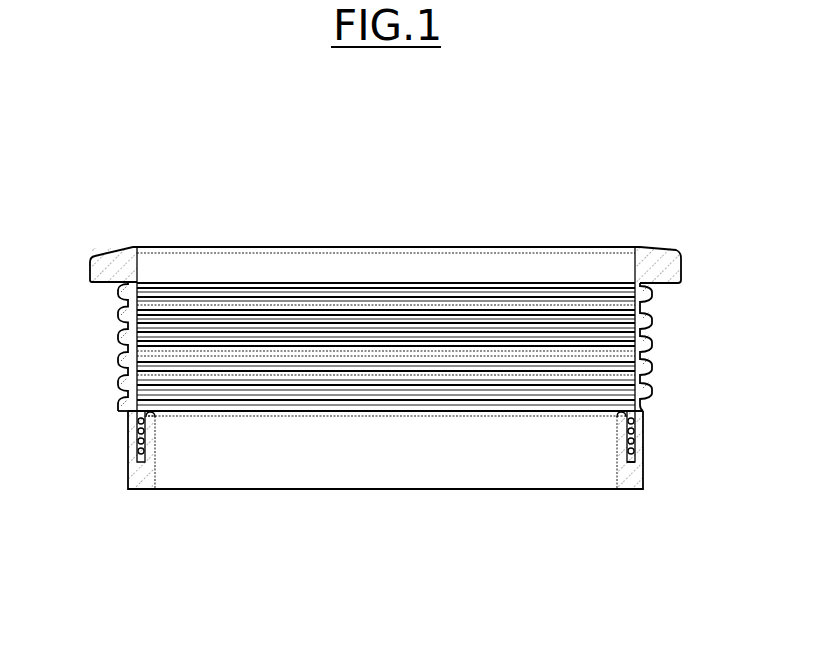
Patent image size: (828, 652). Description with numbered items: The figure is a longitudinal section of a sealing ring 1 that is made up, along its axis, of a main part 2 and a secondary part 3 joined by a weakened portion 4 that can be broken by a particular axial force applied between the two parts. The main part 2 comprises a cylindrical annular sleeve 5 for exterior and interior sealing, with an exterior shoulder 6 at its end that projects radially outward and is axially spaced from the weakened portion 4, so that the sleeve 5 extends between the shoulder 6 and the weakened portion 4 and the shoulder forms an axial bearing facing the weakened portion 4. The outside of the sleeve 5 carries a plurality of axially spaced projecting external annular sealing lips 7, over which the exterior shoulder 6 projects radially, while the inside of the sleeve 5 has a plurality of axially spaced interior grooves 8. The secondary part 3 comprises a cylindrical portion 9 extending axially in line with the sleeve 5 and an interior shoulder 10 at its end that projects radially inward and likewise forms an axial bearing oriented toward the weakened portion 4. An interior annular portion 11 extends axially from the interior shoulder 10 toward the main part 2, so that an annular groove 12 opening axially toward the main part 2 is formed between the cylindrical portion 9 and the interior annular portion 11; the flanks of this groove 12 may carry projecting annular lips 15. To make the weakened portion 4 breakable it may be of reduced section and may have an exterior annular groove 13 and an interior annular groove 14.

The sealing ring 1 is at (82, 247).
The main part 2 is at (118, 337).
The secondary part 3 is at (120, 455).
The weakened portion 4 is at (127, 411).
The cylindrical annular sleeve 5 is at (650, 353).
The exterior shoulder 6 is at (676, 268).
The external annular sealing lips 7 is at (654, 320).
The interior grooves 8 is at (222, 384).
The cylindrical portion 9 is at (638, 425).
The interior shoulder 10 is at (631, 484).
The interior annular portion 11 is at (620, 440).
The annular groove 12 is at (637, 438).
The exterior annular groove 13 is at (642, 411).
The interior annular groove 14 is at (509, 414).
The projecting annular lips 15 is at (637, 452).